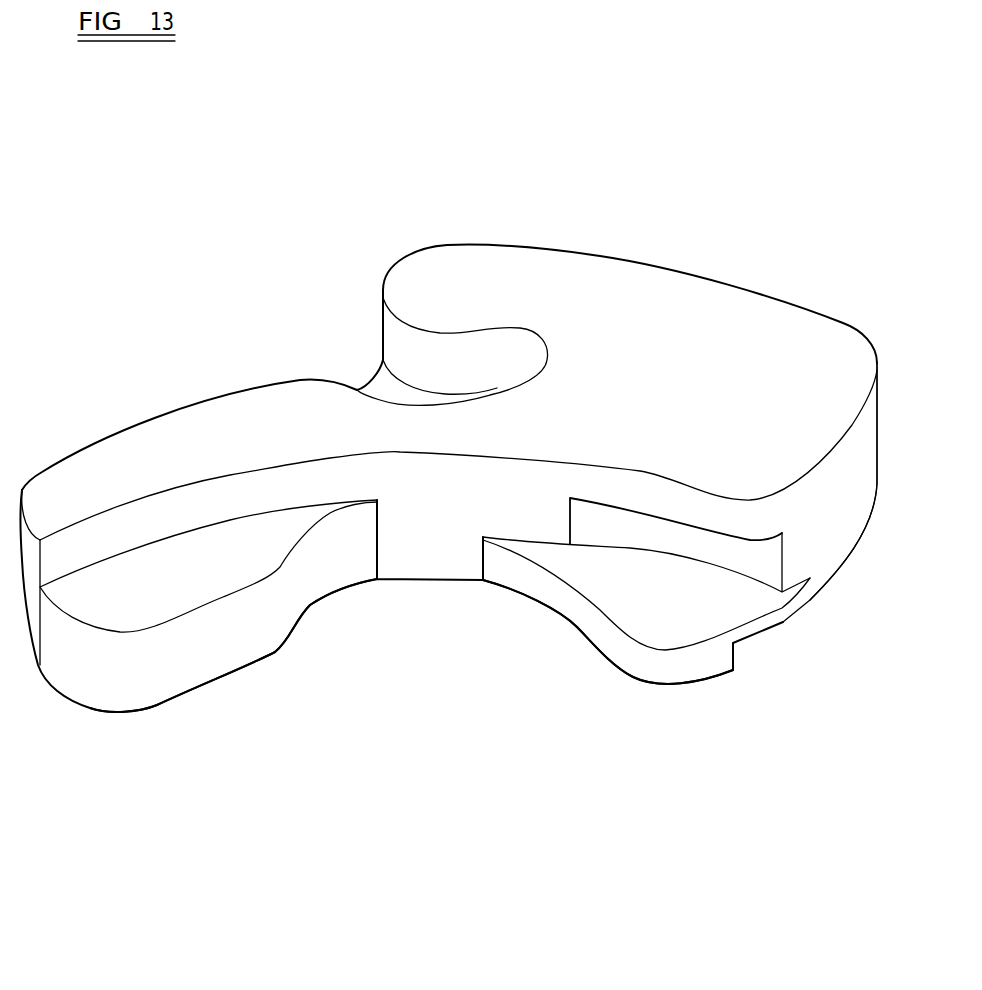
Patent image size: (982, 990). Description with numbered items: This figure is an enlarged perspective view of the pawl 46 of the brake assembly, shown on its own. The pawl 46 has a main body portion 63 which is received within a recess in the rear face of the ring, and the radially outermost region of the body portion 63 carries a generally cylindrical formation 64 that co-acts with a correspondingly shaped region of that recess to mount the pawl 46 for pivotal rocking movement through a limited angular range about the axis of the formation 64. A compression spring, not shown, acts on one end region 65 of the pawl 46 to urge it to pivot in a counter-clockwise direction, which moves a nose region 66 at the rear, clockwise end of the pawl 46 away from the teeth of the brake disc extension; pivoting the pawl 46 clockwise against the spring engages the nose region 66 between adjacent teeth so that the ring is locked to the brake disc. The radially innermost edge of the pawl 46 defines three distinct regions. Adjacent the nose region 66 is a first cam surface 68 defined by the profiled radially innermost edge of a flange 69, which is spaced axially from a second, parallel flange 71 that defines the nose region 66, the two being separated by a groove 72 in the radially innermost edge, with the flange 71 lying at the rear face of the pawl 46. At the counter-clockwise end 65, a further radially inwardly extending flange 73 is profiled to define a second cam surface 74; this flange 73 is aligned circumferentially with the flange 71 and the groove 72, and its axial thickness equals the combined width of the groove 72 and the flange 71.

The pawl 46 is at (775, 258).
The main body portion 63 is at (580, 343).
The generally cylindrical formation 64 is at (424, 258).
The end region 65 is at (48, 466).
The nose region 66 is at (664, 638).
The first cam surface 68 is at (700, 490).
The flange 69 is at (758, 495).
The second flange 71 is at (682, 592).
The groove 72 is at (748, 552).
The further radially inwardly extending flange 73 is at (118, 622).
The second cam surface 74 is at (296, 628).